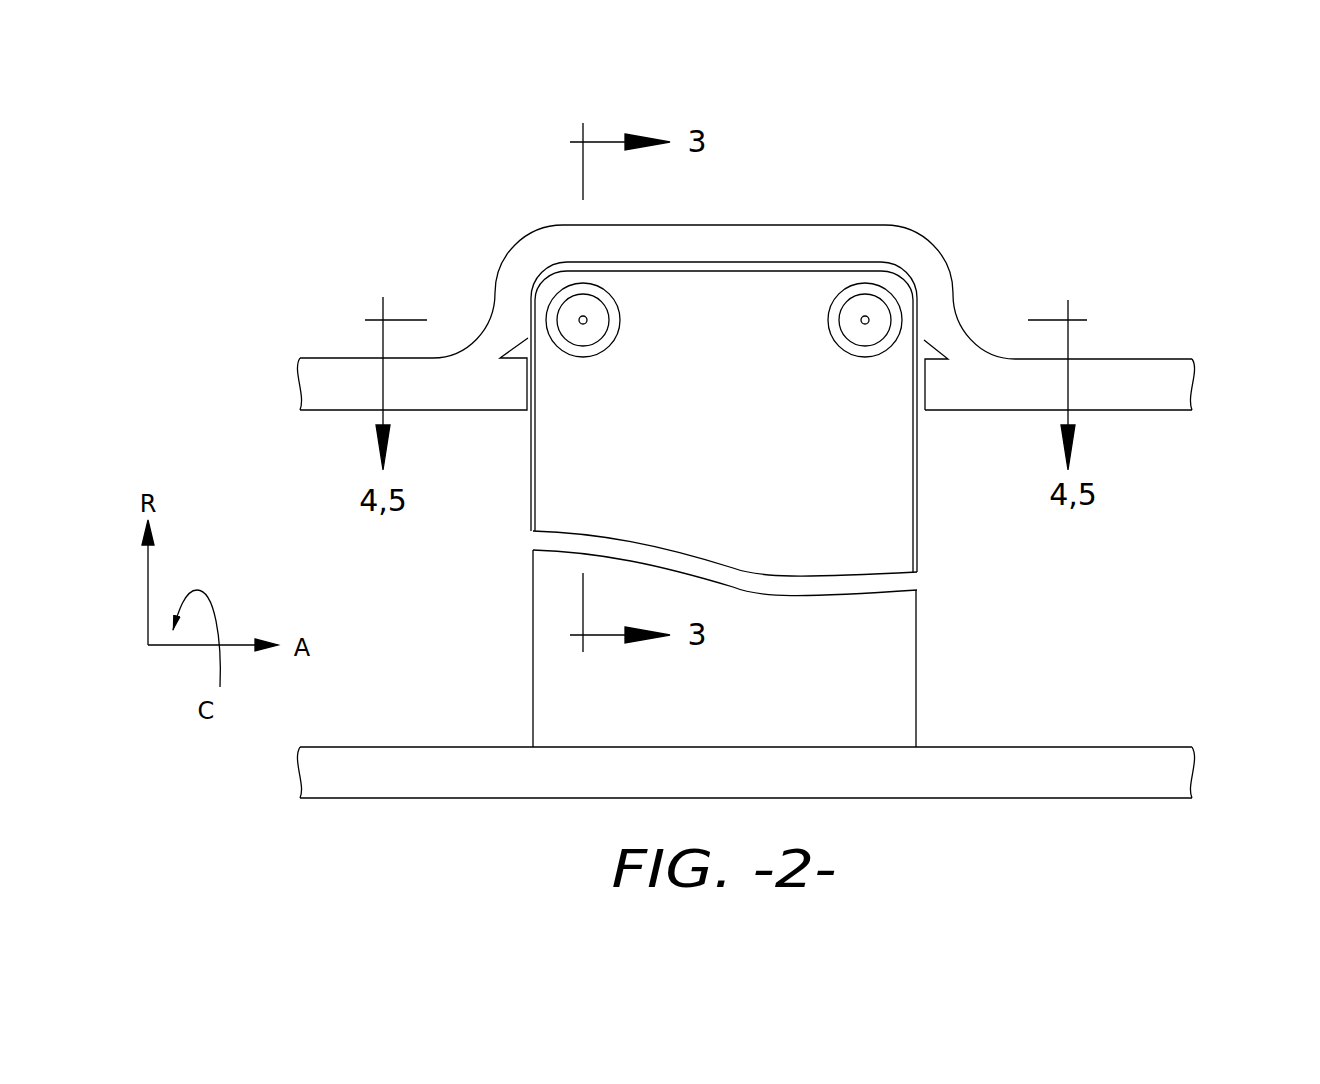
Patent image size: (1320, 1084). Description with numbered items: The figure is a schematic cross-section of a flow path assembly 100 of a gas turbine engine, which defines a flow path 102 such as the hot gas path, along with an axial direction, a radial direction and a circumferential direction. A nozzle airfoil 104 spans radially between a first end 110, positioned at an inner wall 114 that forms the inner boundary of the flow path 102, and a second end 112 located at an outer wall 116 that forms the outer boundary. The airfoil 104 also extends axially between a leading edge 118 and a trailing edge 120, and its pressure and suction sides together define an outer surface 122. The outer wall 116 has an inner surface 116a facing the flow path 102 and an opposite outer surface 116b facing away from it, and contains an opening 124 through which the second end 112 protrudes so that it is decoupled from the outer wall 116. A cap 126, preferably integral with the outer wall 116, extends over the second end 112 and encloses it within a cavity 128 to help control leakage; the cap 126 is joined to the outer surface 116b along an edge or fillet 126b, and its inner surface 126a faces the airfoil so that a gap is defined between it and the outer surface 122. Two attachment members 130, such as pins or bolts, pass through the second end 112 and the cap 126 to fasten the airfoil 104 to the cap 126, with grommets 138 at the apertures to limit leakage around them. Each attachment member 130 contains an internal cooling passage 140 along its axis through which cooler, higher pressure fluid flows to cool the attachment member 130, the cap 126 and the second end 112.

The flow path assembly 100 is at (414, 188).
The flow path 102 is at (470, 653).
The nozzle airfoil 104 is at (893, 535).
The first end 110 is at (927, 737).
The second end 112 is at (924, 343).
The inner wall 114 is at (1088, 760).
The outer wall 116 is at (1172, 398).
The inner surface 116a is at (1122, 415).
The outer surface 116b is at (1127, 351).
The leading edge 118 is at (520, 487).
The trailing edge 120 is at (927, 490).
The outer surface 122 is at (566, 477).
The opening 124 is at (921, 420).
The cap 126 is at (688, 242).
The inner surface 126a is at (811, 264).
The edge or fillet 126b is at (1019, 336).
The cavity 128 is at (526, 342).
The attachment member 130 is at (584, 305).
The grommet 138 is at (567, 290).
The internal cooling passage 140 is at (587, 321).